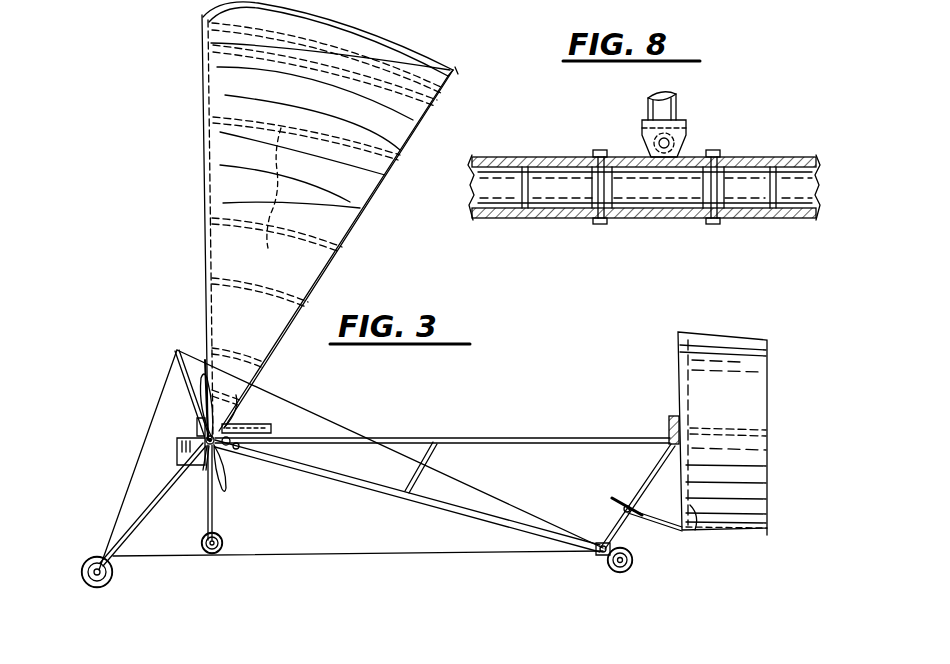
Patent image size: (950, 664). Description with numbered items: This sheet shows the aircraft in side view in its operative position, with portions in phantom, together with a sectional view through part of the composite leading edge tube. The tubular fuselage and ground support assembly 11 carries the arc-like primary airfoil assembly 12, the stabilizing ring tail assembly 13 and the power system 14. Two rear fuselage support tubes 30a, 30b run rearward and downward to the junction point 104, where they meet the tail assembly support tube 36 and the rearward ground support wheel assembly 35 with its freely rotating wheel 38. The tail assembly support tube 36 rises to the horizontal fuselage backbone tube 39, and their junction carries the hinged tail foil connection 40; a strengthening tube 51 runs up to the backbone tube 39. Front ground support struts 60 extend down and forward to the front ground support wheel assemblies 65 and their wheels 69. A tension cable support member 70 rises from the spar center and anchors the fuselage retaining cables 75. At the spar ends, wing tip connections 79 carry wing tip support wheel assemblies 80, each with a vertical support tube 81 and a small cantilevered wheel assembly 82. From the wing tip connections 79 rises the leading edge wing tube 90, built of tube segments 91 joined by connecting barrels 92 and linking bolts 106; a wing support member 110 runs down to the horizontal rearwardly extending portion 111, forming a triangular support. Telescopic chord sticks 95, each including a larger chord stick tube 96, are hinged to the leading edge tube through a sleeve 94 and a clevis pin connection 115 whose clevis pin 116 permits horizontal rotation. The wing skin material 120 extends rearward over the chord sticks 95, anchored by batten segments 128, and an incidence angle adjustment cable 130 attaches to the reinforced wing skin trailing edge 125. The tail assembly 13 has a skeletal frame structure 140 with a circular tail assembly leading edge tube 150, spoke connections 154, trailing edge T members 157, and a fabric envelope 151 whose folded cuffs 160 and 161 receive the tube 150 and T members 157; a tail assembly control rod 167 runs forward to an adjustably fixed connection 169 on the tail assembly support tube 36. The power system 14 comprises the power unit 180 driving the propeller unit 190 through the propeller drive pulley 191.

In FIG. 3, the tubular fuselage and ground support assembly 11 is at (107, 492).
In FIG. 3, the primary airfoil assembly 12 is at (163, 11).
In FIG. 3, the stabilizing ring tail assembly 13 is at (758, 330).
In FIG. 3, the power system 14 is at (167, 438).
In FIG. 3, the rear fuselage support tube 30a is at (350, 487).
In FIG. 3, the rear fuselage support tube 30b is at (418, 503).
In FIG. 3, the rearward ground support wheel assembly 35 is at (633, 560).
In FIG. 3, the tail assembly support tube 36 is at (640, 495).
In FIG. 3, the wheel 38 is at (620, 573).
In FIG. 3, the fuselage backbone tube 39 is at (522, 437).
In FIG. 3, the tail foil connection 40 is at (668, 425).
In FIG. 3, the strengthening tube 51 is at (438, 450).
In FIG. 3, the front ground support strut 60 is at (150, 512).
In FIG. 3, the front ground support wheel assembly 65 is at (77, 578).
In FIG. 3, the wheel 69 is at (98, 588).
In FIG. 3, the tension cable support member 70 is at (175, 350).
In FIG. 3, the fuselage retaining cable 75 is at (322, 418).
In FIG. 3, the wing tip connection 79 is at (203, 462).
In FIG. 3, the wing tip support wheel assembly 80 is at (227, 540).
In FIG. 3, the support tube 81 is at (215, 500).
In FIG. 3, the cantilevered wheel assembly 82 is at (223, 557).
In FIG. 3, the leading edge wing tube 90 is at (202, 88).
In FIG. 8, the tube segments 91 is at (540, 160).
In FIG. 8, the connecting barrel 92 is at (760, 193).
In FIG. 8, the sleeve 94 is at (683, 162).
In FIG. 3, the chord stick 95 is at (330, 145).
In FIG. 8, the chord stick tube 96 is at (678, 100).
In FIG. 3, the junction point 104 is at (598, 553).
In FIG. 8, the linking bolt 106 is at (596, 192).
In FIG. 3, the wing support member 110 is at (210, 375).
In FIG. 3, the horizontal rearwardly extending portion 111 is at (238, 455).
In FIG. 8, the clevis pin connection 115 is at (645, 142).
In FIG. 8, the clevis pin 116 is at (670, 143).
In FIG. 3, the wing skin material 120 is at (372, 34).
In FIG. 3, the reinforced wing skin trailing edge 125 is at (456, 68).
In FIG. 3, the batten segments 128 is at (447, 90).
In FIG. 3, the incidence angle adjustment cable 130 is at (240, 410).
In FIG. 3, the skeletal frame structure 140 is at (674, 370).
In FIG. 3, the tail assembly leading edge tube 150 is at (680, 336).
In FIG. 3, the fabric envelope 151 is at (750, 470).
In FIG. 3, the connection 154 is at (690, 540).
In FIG. 3, the trailing edge T member 157 is at (768, 390).
In FIG. 3, the leading edge folded cuff 160 is at (707, 524).
In FIG. 3, the trailing edge folded cuff 161 is at (772, 535).
In FIG. 3, the tail assembly control rod 167 is at (652, 520).
In FIG. 3, the adjustably fixed connection 169 is at (615, 505).
In FIG. 3, the power unit 180 is at (177, 448).
In FIG. 3, the propeller unit 190 is at (228, 480).
In FIG. 3, the propeller drive pulley 191 is at (198, 425).